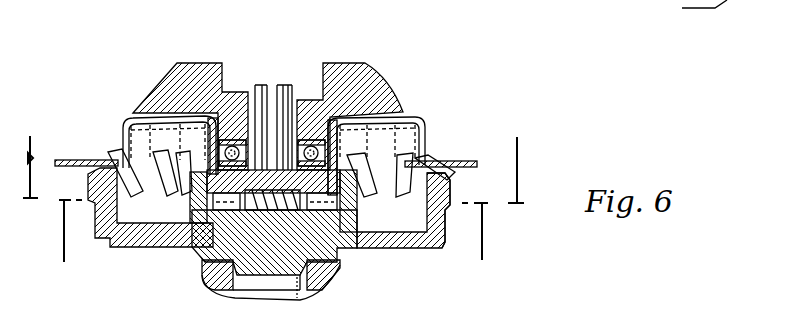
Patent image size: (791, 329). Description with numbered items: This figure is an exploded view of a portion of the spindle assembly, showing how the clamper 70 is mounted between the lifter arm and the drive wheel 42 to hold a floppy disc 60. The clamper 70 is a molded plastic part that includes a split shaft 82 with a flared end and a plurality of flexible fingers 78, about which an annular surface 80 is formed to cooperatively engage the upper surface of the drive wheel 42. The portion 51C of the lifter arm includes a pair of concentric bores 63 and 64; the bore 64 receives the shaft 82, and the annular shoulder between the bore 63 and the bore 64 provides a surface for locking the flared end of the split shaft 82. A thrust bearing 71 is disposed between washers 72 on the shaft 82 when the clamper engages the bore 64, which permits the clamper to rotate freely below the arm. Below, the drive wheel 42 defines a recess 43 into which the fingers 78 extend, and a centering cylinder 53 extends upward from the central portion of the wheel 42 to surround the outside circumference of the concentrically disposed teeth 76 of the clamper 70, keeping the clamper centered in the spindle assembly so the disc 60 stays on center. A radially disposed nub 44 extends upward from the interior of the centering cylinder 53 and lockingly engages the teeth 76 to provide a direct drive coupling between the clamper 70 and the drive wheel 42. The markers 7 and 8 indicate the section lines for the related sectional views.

The section line 7- 7 is at (273, 151).
The section line 8- 8 is at (267, 241).
The drive wheel 42 is at (430, 247).
The recess 43 is at (137, 212).
The radially disposed nub 44 is at (343, 238).
The portion of lifter arm 51C is at (352, 67).
The centering cylinder 53 is at (172, 203).
The disc 60 is at (462, 162).
The bore 63 is at (224, 63).
The bore 64 is at (263, 84).
The clamper 70 is at (430, 108).
The thrust bearing 71 is at (233, 152).
The washers 72 is at (315, 140).
The teeth 76 is at (263, 193).
The flexible fingers 78 is at (182, 192).
The annular surface 80 is at (106, 160).
The shaft 82 is at (289, 84).